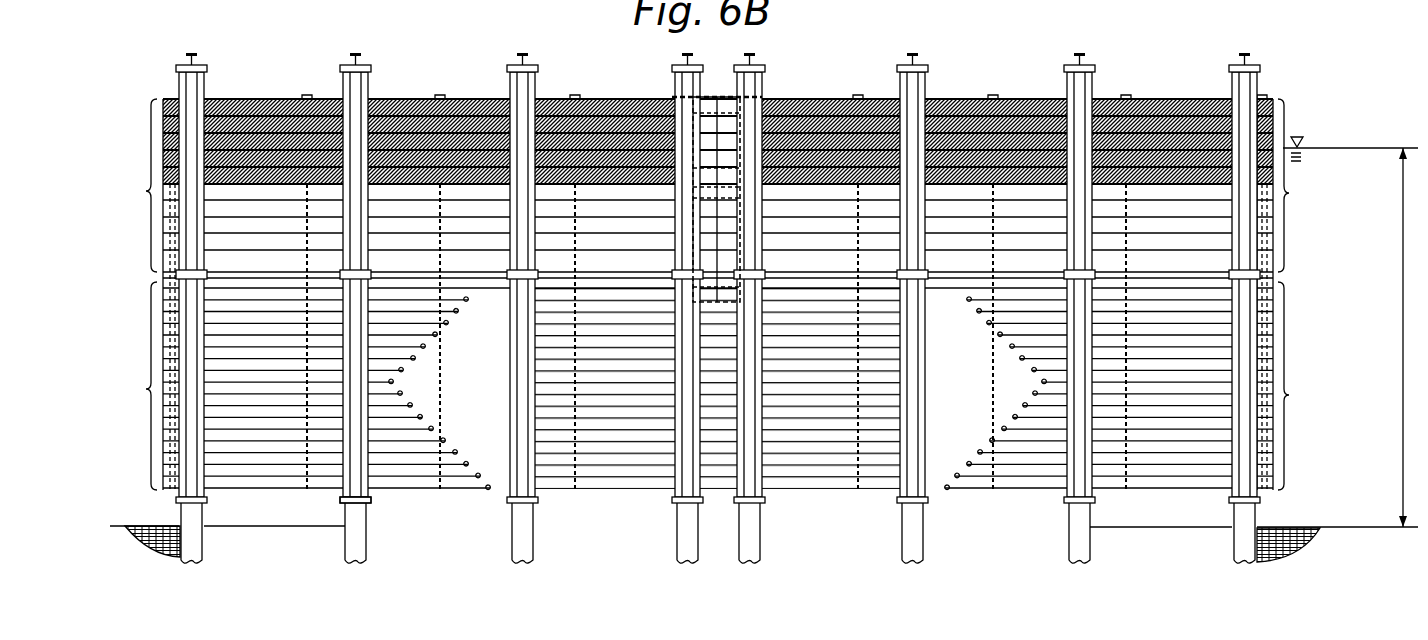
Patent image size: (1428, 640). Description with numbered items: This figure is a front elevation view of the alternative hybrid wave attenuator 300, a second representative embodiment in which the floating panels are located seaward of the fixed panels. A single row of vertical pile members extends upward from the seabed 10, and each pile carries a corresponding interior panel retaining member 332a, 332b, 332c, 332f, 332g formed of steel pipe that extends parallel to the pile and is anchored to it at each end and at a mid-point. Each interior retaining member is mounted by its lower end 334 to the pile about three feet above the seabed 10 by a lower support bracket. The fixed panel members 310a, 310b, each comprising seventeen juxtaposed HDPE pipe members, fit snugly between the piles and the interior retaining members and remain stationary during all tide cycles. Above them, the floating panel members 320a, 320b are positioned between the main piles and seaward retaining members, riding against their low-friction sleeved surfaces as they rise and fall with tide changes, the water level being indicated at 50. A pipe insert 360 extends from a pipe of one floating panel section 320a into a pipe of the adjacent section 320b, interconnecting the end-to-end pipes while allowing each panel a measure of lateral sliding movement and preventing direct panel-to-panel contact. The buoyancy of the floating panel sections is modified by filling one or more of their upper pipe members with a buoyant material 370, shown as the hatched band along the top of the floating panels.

The alternative hybrid wave attenuator 300 is at (1289, 68).
The buoyant material 370 is at (402, 100).
The floating panel member 320a is at (400, 294).
The floating panel member 320b is at (1035, 294).
The fixed panel member 310a is at (400, 386).
The fixed panel member 310b is at (1039, 386).
The pipe insert 360 is at (720, 303).
The lower end of interior retaining member 334 is at (364, 504).
The seabed 10 is at (258, 527).
The mean higher high water level 50 is at (1367, 148).
The interior panel retaining member 332a is at (168, 281).
The interior panel retaining member 332b is at (332, 281).
The interior panel retaining member 332c is at (499, 281).
The interior panel retaining member 332f is at (888, 281).
The interior panel retaining member 332g is at (1054, 281).